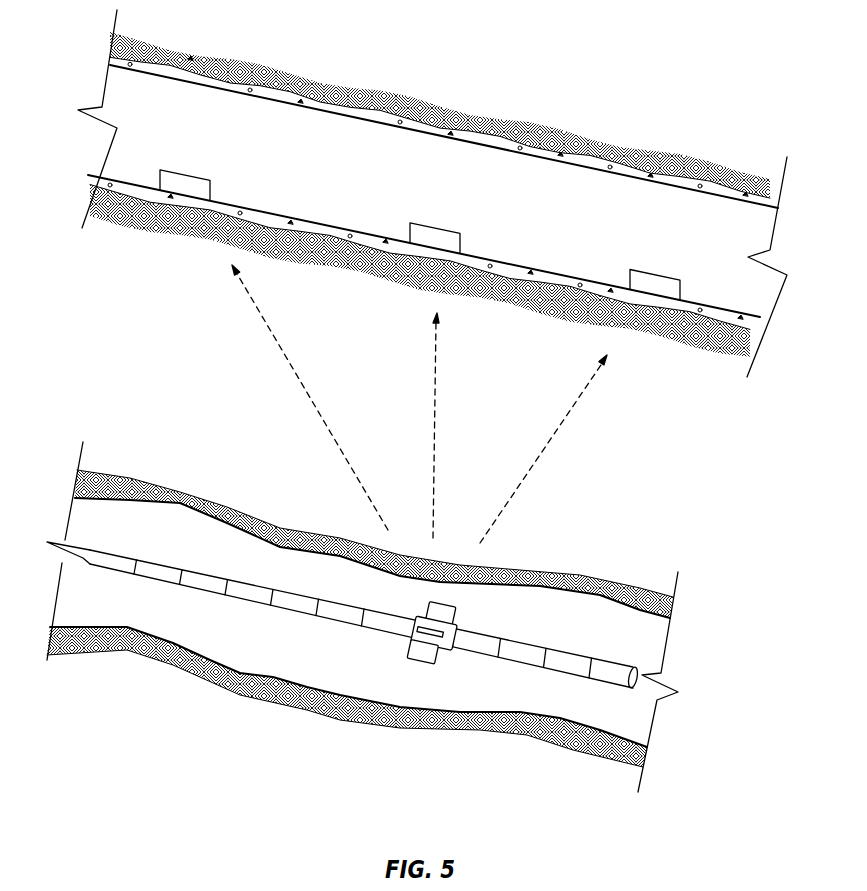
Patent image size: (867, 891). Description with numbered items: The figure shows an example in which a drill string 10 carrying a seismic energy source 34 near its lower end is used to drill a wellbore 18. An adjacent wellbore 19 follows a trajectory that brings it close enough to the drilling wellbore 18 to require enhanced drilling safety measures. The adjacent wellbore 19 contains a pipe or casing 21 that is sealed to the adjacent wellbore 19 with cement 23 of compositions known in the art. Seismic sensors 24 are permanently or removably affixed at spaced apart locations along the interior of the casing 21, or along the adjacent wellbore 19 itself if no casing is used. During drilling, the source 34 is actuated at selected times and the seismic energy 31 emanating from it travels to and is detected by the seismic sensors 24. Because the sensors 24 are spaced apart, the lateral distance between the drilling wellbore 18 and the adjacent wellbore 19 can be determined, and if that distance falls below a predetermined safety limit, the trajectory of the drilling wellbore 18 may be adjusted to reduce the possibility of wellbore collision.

The drill string 10 is at (172, 520).
The wellbore 18 is at (258, 660).
The adjacent wellbore 19 is at (518, 145).
The pipe or casing 21 is at (723, 310).
The cement 23 is at (341, 100).
The seismic sensors 24 is at (182, 185).
The seismic energy 31 is at (290, 367).
The seismic energy source 34 is at (427, 660).